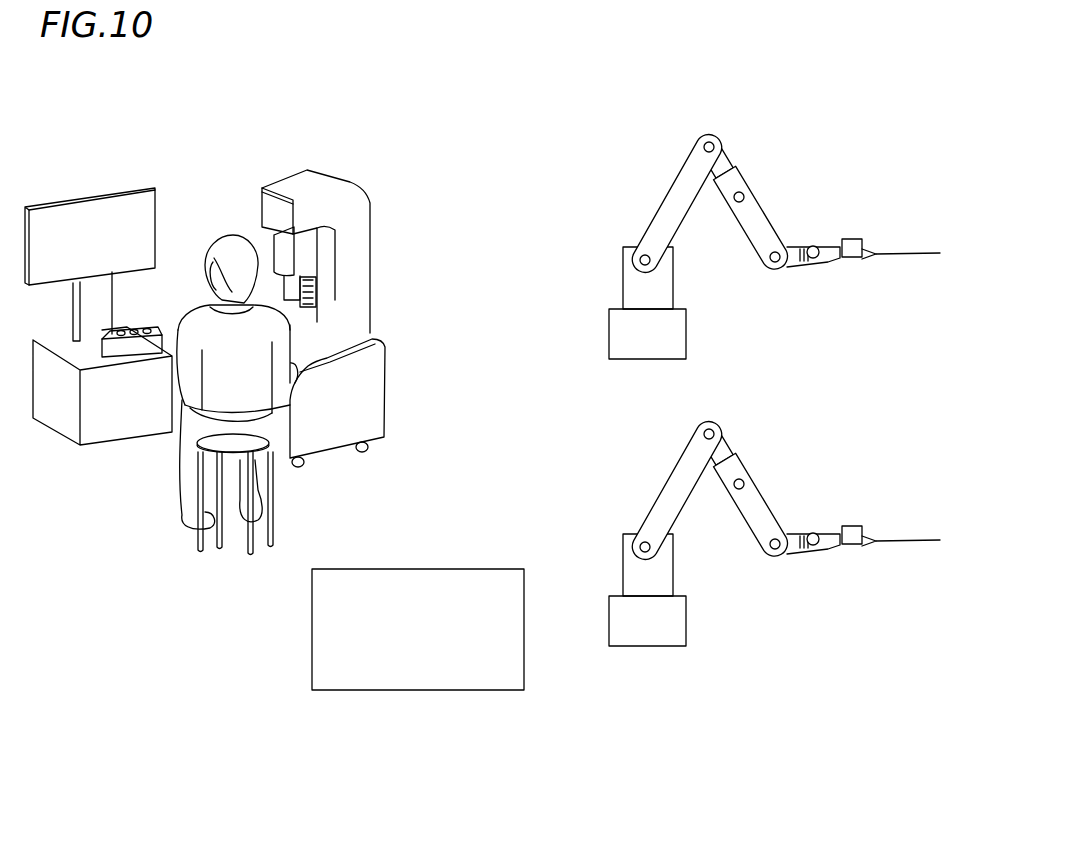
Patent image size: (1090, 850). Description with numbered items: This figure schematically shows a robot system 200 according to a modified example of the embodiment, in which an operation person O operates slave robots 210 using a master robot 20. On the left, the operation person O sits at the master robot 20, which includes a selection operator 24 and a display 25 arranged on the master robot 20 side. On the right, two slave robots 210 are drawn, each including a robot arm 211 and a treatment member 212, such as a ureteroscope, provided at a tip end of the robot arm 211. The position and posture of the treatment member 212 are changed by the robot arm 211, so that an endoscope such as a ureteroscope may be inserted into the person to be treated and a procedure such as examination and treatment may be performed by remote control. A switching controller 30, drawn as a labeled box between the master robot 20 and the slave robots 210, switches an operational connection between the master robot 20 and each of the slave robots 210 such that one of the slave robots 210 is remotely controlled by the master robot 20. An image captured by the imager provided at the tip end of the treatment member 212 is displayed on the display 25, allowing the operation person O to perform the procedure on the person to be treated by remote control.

The master robot 20 is at (398, 201).
The selection operator 24 is at (148, 328).
The display 25 is at (147, 210).
The operation person O is at (228, 233).
The switching controller 30 is at (507, 556).
The robot system 200 is at (586, 80).
The slave robot 210 is at (774, 348).
The robot arm 211 is at (749, 158).
The treatment member 212 is at (861, 223).